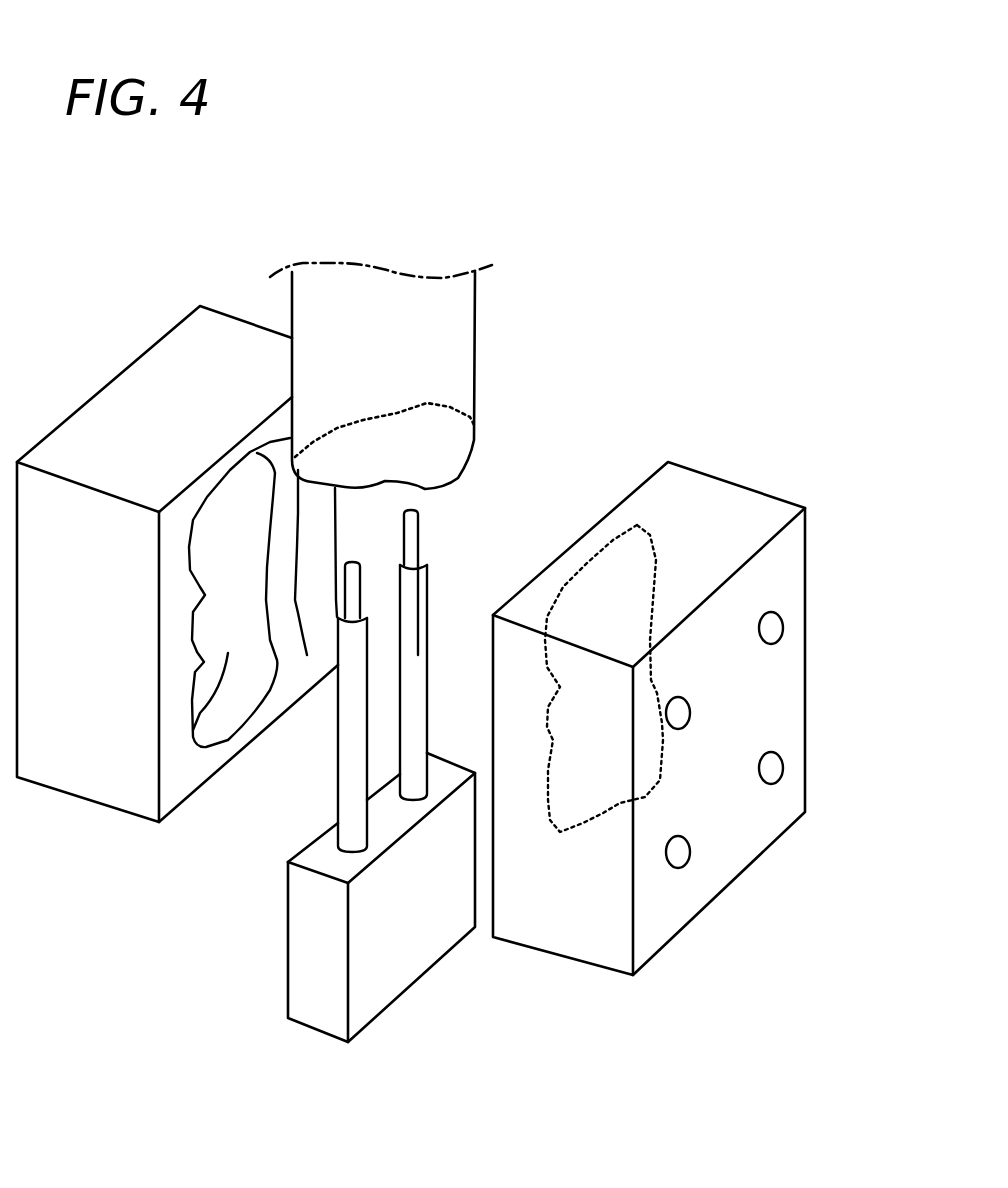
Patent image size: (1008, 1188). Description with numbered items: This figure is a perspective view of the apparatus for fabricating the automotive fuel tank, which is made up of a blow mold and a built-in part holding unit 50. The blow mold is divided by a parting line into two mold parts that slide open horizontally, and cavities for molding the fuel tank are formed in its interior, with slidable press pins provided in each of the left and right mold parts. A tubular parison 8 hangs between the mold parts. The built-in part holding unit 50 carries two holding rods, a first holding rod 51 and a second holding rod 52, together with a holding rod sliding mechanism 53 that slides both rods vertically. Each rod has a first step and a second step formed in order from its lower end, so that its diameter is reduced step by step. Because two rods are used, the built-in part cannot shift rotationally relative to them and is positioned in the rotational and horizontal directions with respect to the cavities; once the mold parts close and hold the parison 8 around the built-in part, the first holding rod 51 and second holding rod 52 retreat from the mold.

The parison 8 is at (475, 343).
The built-in part holding unit 50 is at (351, 933).
The first holding rod 51 is at (335, 790).
The second holding rod 52 is at (415, 775).
The holding rod sliding mechanism 53 is at (393, 940).